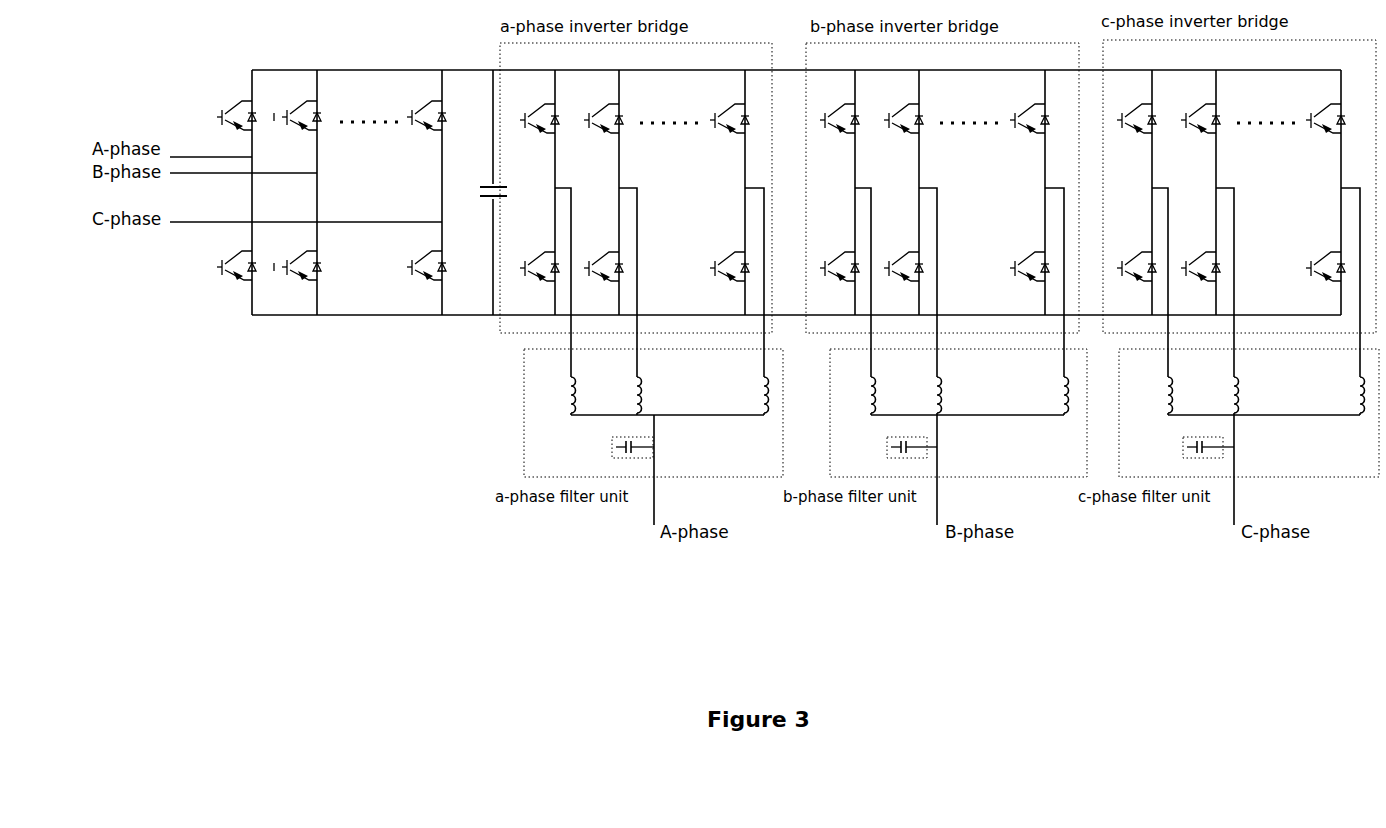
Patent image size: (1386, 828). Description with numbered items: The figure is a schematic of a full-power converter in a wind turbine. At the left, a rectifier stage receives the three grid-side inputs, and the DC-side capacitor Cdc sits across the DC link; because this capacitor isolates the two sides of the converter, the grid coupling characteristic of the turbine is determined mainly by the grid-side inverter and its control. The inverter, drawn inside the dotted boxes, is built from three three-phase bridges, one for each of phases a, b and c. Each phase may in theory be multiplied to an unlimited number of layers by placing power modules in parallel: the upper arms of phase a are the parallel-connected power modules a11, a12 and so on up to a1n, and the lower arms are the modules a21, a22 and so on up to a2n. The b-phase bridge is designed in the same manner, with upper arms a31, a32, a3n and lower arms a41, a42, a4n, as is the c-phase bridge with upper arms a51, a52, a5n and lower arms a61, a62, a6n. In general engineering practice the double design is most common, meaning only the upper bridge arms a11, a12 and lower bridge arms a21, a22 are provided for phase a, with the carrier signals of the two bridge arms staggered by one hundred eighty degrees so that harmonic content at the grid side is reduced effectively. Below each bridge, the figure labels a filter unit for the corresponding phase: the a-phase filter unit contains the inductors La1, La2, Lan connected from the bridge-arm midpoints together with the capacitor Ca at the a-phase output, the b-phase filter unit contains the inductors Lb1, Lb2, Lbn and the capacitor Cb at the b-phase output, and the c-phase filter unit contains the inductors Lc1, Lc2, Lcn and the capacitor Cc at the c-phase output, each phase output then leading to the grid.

The DC bus capacitor Cdc is at (479, 192).
The upper bridge arm a11 is at (533, 122).
The upper bridge arm a12 is at (597, 122).
The upper arm power module a1n is at (721, 122).
The lower bridge arm a21 is at (534, 261).
The lower bridge arm a22 is at (598, 261).
The a-phase inverter bridge lower switch n a2n is at (723, 261).
The b-phase inverter bridge upper switch 1 a31 is at (833, 122).
The b-phase inverter bridge upper switch 2 a32 is at (897, 122).
The b-phase inverter bridge upper switch n a3n is at (1021, 122).
The b-phase inverter bridge lower switch 1 a41 is at (834, 261).
The b-phase inverter bridge lower switch 2 a42 is at (898, 261).
The b-phase inverter bridge lower switch n a4n is at (1023, 261).
The c-phase inverter bridge upper switch 1 a51 is at (1130, 122).
The c-phase inverter bridge upper switch 2 a52 is at (1194, 122).
The c-phase inverter bridge upper switch n a5n is at (1317, 122).
The c-phase inverter bridge lower switch 1 a61 is at (1131, 261).
The c-phase inverter bridge lower switch 2 a62 is at (1195, 261).
The c-phase inverter bridge lower switch n a6n is at (1319, 261).
The a-phase filter inductor 1 La1 is at (555, 301).
The a-phase filter inductor 2 La2 is at (622, 301).
The a-phase filter inductor n Lan is at (749, 301).
The a-phase filter capacitor Ca is at (621, 447).
The b-phase filter inductor 1 Lb1 is at (857, 301).
The b-phase filter inductor 2 Lb2 is at (922, 301).
The b-phase filter inductor n Lbn is at (1048, 301).
The b-phase filter capacitor Cb is at (900, 447).
The c-phase filter inductor 1 Lc1 is at (1154, 301).
The c-phase filter inductor 2 Lc2 is at (1219, 301).
The c-phase filter inductor n Lcn is at (1345, 301).
The c-phase filter capacitor Cc is at (1197, 447).